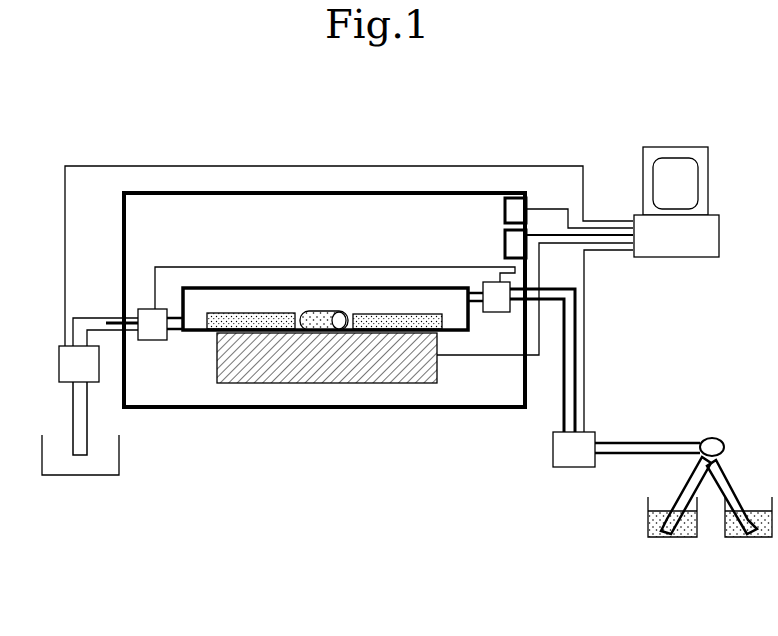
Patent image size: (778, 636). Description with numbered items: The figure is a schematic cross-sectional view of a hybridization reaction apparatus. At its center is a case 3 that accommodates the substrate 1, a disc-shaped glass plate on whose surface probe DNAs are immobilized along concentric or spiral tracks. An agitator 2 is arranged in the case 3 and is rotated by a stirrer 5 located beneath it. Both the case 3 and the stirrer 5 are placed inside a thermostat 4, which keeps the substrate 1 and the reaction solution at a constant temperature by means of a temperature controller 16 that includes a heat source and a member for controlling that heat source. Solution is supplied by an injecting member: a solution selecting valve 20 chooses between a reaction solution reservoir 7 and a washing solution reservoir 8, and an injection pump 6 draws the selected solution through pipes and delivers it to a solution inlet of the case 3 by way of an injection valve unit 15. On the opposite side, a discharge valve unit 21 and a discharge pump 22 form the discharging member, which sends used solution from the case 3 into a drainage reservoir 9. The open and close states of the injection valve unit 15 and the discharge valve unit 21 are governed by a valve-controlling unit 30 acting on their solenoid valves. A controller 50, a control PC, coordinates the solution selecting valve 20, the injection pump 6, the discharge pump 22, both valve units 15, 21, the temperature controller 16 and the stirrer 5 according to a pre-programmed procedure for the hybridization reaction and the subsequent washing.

The substrate 1 is at (230, 312).
The agitator 2 is at (317, 308).
The case 3 is at (365, 288).
The thermostat 4 is at (287, 192).
The stirrer 5 is at (375, 383).
The injection pump 6 is at (562, 455).
The reaction solution reservoir 7 is at (683, 532).
The washing solution reservoir 8 is at (737, 527).
The drainage reservoir 9 is at (98, 475).
The injection valve unit 15 is at (490, 290).
The temperature controller 16 is at (523, 193).
The solution selecting valve 20 is at (710, 440).
The discharge valve unit 21 is at (145, 320).
The discharge pump 22 is at (68, 362).
The valve-controlling unit 30 is at (503, 232).
The controller 50 is at (673, 252).